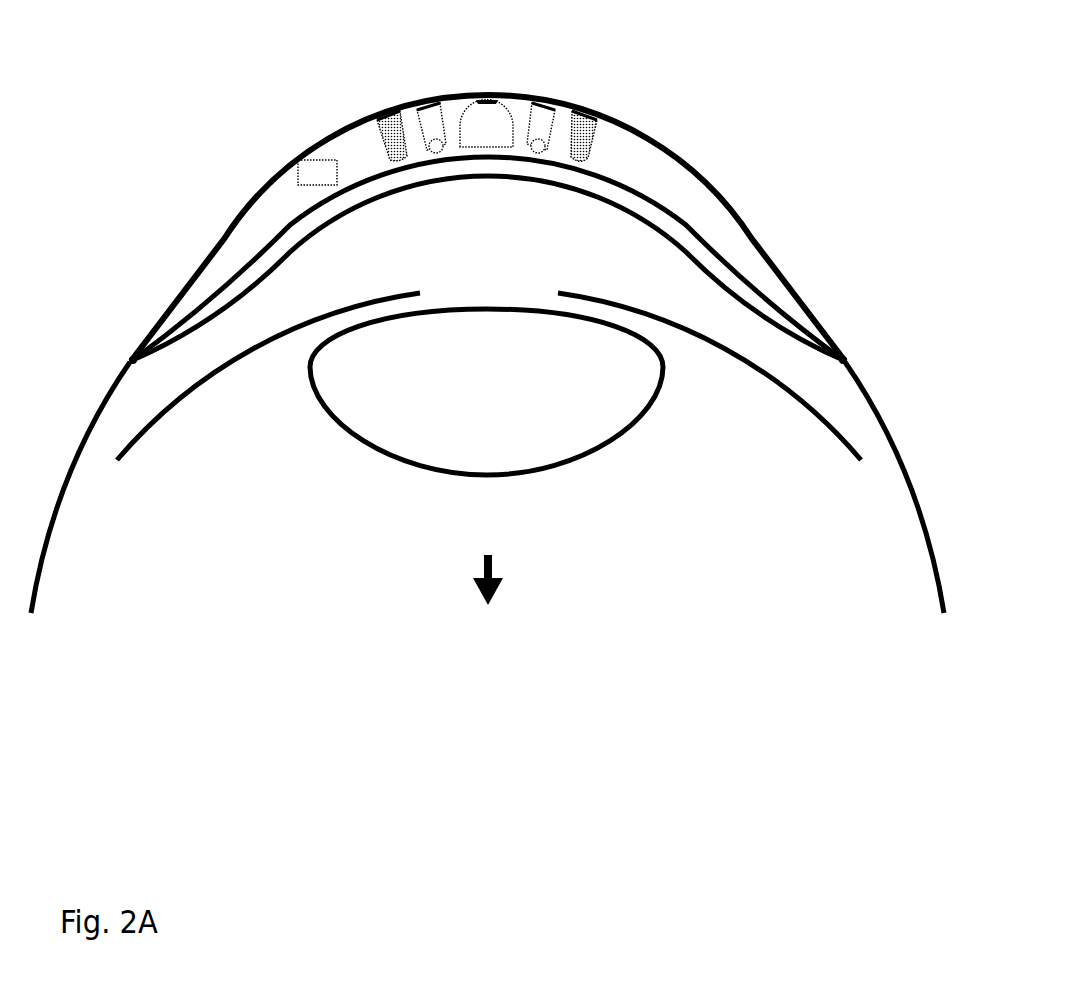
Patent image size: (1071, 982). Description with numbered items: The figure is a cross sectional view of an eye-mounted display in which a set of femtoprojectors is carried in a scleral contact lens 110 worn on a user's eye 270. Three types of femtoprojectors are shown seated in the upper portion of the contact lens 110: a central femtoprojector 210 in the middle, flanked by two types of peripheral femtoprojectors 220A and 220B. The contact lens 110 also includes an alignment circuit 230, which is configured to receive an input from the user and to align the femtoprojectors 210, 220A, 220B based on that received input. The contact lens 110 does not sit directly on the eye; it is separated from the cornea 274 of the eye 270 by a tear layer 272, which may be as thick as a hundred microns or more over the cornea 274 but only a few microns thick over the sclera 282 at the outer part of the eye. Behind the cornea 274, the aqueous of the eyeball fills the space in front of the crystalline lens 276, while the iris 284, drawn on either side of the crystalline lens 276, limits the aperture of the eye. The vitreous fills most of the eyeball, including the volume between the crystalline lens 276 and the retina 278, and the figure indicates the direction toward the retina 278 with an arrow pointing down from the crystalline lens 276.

The scleral contact lens 110 is at (265, 217).
The central femtoprojector 210 is at (505, 123).
The peripheral femtoprojector 220A is at (540, 118).
The peripheral femtoprojector 220B is at (607, 113).
The alignment circuit 230 is at (298, 168).
The eye 270 is at (750, 544).
The tear layer 272 is at (640, 207).
The cornea 274 is at (455, 244).
The crystalline lens 276 is at (475, 404).
The retina 278 is at (482, 562).
The sclera 282 is at (487, 455).
The iris 284 is at (655, 290).